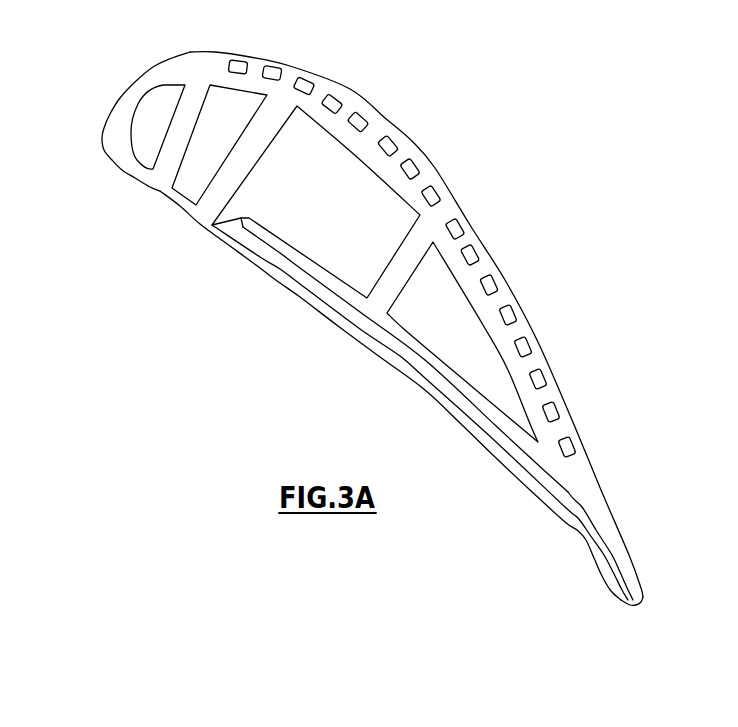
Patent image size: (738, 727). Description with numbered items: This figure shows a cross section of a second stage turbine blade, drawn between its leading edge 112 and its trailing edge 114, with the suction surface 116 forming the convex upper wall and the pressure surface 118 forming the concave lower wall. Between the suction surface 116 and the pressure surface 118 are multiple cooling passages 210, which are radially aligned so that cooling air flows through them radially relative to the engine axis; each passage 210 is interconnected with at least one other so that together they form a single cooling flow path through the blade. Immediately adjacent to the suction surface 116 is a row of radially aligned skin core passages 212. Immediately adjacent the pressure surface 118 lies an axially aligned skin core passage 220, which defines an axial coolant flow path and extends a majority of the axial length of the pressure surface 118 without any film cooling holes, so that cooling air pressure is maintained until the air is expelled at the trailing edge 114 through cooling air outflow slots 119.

The leading edge 112 is at (116, 96).
The trailing edge 114 is at (645, 597).
The suction surface 116 is at (413, 142).
The pressure surface 118 is at (338, 327).
The cooling air outflow slots 119 is at (632, 605).
The cooling passages 210 is at (159, 119).
The radially aligned skin core passages 212 is at (303, 85).
The axially aligned skin core passage 220 is at (297, 271).